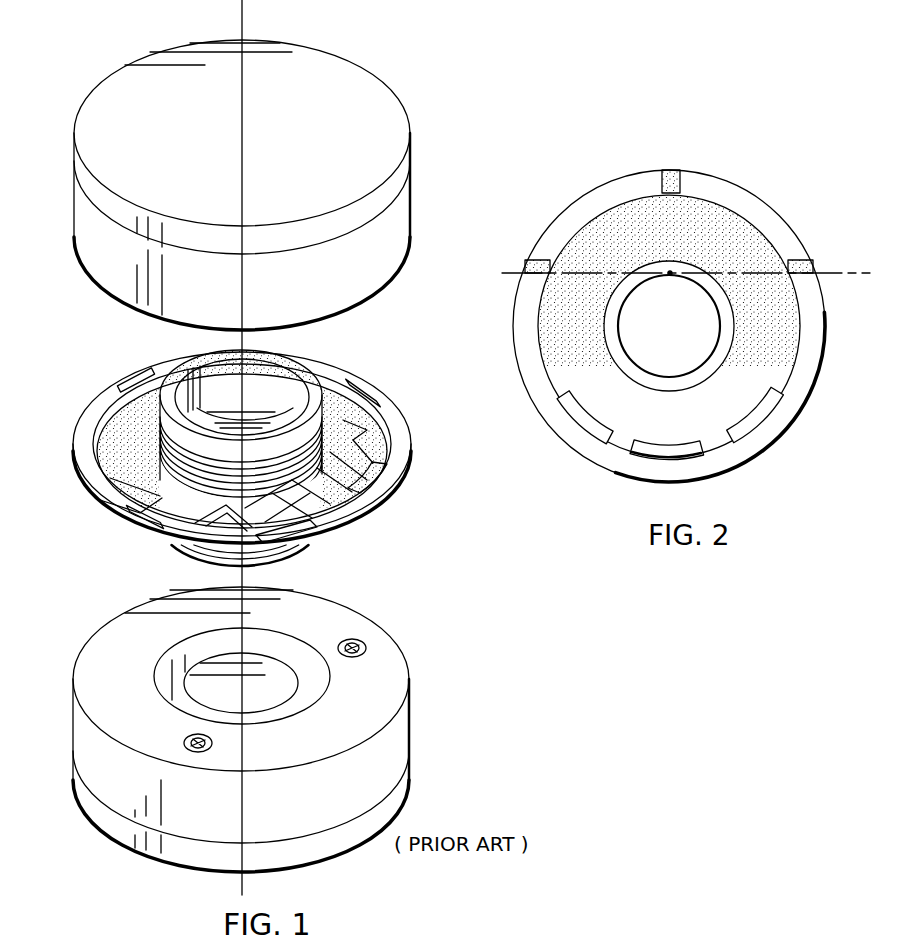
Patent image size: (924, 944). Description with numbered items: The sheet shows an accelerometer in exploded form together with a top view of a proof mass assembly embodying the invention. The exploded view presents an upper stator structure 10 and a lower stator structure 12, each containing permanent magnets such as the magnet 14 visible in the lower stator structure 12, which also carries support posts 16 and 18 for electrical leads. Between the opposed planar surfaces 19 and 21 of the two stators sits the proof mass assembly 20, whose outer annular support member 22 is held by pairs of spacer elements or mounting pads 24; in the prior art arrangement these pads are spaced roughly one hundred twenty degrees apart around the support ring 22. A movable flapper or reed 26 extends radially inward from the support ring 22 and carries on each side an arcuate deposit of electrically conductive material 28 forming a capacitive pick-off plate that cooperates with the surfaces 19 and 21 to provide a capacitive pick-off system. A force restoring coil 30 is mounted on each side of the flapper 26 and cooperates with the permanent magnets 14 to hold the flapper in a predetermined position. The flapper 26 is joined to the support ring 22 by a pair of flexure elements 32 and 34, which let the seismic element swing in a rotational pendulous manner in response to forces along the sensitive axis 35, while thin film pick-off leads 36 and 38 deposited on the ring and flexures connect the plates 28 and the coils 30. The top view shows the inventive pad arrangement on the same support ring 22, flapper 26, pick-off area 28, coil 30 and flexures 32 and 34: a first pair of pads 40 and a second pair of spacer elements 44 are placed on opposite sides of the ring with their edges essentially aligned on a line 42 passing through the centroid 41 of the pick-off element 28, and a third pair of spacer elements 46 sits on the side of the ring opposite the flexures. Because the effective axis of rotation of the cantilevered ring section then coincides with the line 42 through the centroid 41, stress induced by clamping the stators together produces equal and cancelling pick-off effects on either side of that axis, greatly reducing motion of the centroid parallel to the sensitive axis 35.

In FIG. 1, the upper stator structure 10 is at (267, 190).
In FIG. 1, the lower stator structure 12 is at (272, 729).
In FIG. 1, the permanent magnet 14 is at (263, 703).
In FIG. 1, the support post 16 is at (364, 645).
In FIG. 1, the support post 18 is at (185, 740).
In FIG. 1, the planar surface 19 is at (358, 302).
In FIG. 1, the proof mass assembly 20 is at (362, 358).
In FIG. 1, the planar surface 21 is at (387, 688).
In FIG. 1, the outer annular support member 22 is at (91, 413).
In FIG. 2, the outer annular support member 22 is at (803, 392).
In FIG. 1, the mounting pads 24 is at (130, 377).
In FIG. 1, the flapper 26 is at (107, 443).
In FIG. 2, the flapper 26 is at (598, 363).
In FIG. 1, the capacitive pick-off plate 28 is at (137, 462).
In FIG. 2, the capacitive pick-off plate 28 is at (698, 225).
In FIG. 1, the force restoring coil 30 is at (128, 500).
In FIG. 2, the force restoring coil 30 is at (735, 338).
In FIG. 1, the flexure element 32 is at (290, 504).
In FIG. 2, the flexure element 32 is at (621, 436).
In FIG. 1, the flexure element 34 is at (362, 468).
In FIG. 2, the flexure element 34 is at (722, 442).
In FIG. 1, the sensitive axis 35 is at (244, 22).
In FIG. 1, the thin film pick-off lead 36 is at (307, 529).
In FIG. 1, the thin film pick-off lead 38 is at (383, 500).
In FIG. 2, the first pair of support pads 40 is at (528, 267).
In FIG. 2, the centroid of pick-off element 41 is at (670, 273).
In FIG. 2, the axis line 42 is at (503, 272).
In FIG. 2, the second pair of spacer elements 44 is at (800, 263).
In FIG. 2, the third pair of spacer elements 46 is at (676, 170).